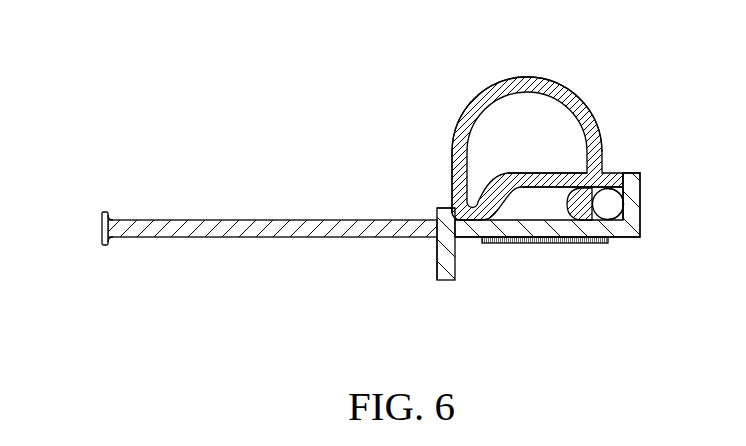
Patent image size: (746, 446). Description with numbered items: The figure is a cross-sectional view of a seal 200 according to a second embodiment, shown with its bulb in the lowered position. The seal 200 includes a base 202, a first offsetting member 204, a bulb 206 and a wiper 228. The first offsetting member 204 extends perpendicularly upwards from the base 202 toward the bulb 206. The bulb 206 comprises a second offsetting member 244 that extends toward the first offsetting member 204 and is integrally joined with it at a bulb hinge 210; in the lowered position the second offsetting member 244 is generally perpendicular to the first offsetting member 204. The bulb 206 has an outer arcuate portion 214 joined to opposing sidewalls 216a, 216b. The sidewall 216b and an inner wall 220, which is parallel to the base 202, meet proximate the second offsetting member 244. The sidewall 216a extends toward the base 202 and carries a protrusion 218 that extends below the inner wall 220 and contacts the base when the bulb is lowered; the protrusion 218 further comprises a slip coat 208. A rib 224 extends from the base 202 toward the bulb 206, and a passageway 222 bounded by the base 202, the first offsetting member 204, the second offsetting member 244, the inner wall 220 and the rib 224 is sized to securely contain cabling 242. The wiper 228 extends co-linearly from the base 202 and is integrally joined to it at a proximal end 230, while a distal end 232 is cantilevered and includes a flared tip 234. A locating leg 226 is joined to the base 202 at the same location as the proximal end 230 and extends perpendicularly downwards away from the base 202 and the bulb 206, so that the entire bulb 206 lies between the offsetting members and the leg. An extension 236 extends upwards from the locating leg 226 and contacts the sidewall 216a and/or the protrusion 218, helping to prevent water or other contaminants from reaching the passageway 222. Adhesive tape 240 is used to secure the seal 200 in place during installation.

The seal 200 is at (186, 73).
The base 202 is at (563, 232).
The first offsetting member 204 is at (632, 208).
The bulb 206 is at (458, 49).
The slip coat 208 is at (450, 155).
The bulb hinge 210 is at (627, 180).
The outer arcuate portion 214 is at (527, 77).
The sidewall 216a is at (462, 115).
The sidewall 216b is at (592, 115).
The protrusion 218 is at (450, 188).
The inner wall 220 is at (557, 184).
The passageway 222 is at (598, 243).
The rib 224 is at (565, 199).
The locating leg 226 is at (437, 270).
The wiper 228 is at (220, 256).
The proximal end 230 is at (437, 237).
The distal end 232 is at (102, 227).
The flared tip 234 is at (110, 240).
The extension 236 is at (435, 210).
The adhesive tape 240 is at (502, 241).
The cabling 242 is at (613, 207).
The second offsetting member 244 is at (620, 172).